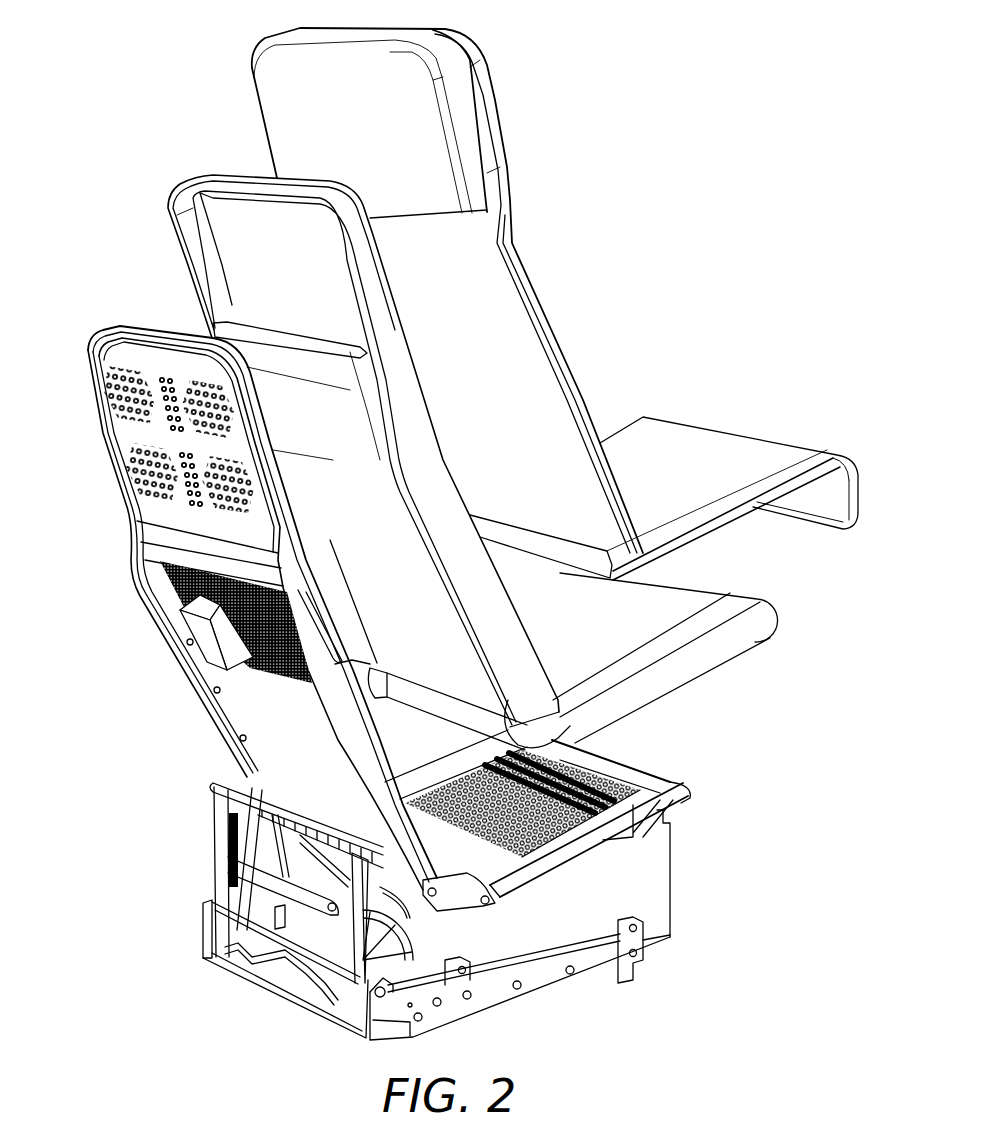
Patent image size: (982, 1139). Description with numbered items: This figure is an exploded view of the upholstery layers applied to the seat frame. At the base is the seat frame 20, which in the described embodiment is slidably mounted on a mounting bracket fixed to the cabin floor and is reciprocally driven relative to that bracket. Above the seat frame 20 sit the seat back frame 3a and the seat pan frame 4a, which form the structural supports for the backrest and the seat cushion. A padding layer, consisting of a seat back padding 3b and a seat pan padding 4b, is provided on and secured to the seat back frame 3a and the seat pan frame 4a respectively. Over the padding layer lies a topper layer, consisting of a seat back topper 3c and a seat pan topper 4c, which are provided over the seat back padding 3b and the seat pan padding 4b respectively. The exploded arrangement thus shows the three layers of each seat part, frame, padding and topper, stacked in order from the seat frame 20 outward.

The seat back frame 3a is at (137, 436).
The seat back padding 3b is at (369, 544).
The seat back topper 3c is at (489, 370).
The seat pan frame 4a is at (458, 790).
The seat pan padding 4b is at (617, 631).
The seat pan topper 4c is at (686, 482).
The seat frame 20 is at (572, 921).